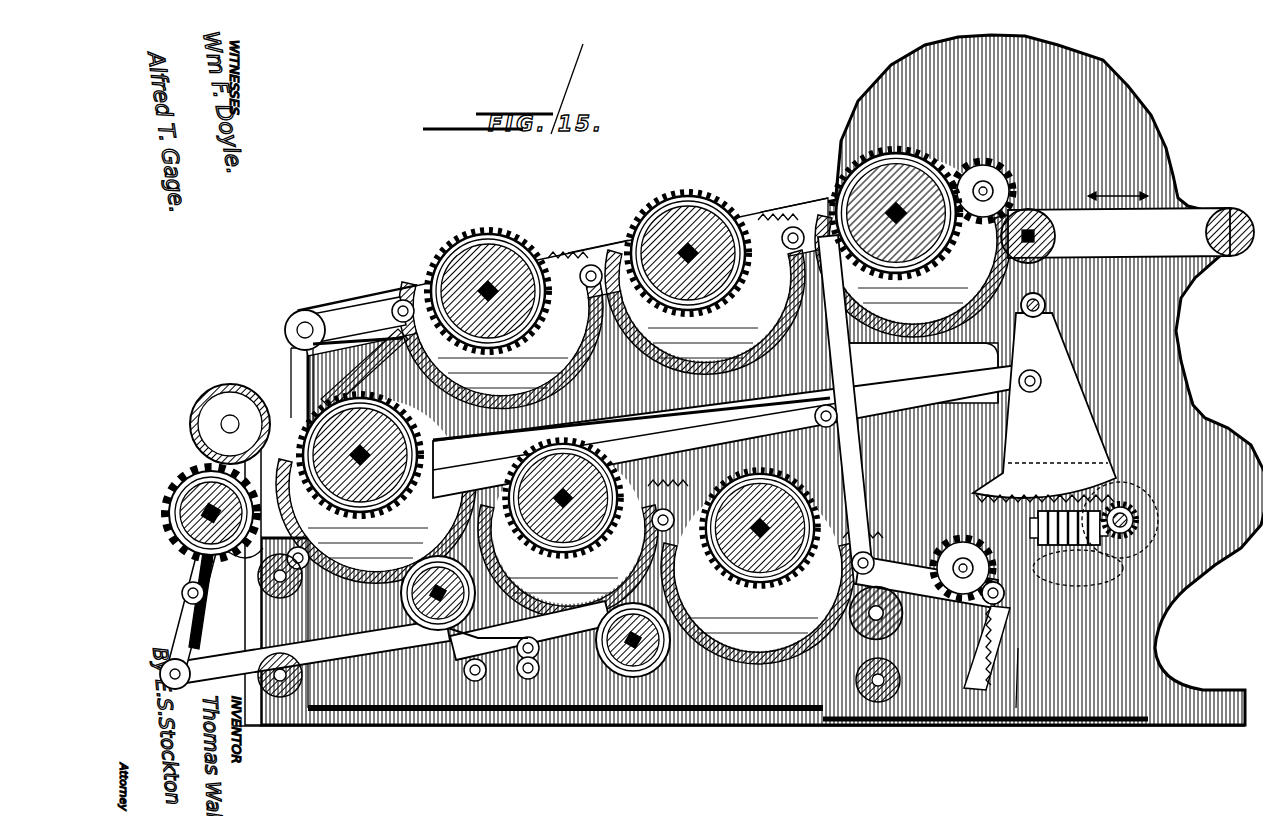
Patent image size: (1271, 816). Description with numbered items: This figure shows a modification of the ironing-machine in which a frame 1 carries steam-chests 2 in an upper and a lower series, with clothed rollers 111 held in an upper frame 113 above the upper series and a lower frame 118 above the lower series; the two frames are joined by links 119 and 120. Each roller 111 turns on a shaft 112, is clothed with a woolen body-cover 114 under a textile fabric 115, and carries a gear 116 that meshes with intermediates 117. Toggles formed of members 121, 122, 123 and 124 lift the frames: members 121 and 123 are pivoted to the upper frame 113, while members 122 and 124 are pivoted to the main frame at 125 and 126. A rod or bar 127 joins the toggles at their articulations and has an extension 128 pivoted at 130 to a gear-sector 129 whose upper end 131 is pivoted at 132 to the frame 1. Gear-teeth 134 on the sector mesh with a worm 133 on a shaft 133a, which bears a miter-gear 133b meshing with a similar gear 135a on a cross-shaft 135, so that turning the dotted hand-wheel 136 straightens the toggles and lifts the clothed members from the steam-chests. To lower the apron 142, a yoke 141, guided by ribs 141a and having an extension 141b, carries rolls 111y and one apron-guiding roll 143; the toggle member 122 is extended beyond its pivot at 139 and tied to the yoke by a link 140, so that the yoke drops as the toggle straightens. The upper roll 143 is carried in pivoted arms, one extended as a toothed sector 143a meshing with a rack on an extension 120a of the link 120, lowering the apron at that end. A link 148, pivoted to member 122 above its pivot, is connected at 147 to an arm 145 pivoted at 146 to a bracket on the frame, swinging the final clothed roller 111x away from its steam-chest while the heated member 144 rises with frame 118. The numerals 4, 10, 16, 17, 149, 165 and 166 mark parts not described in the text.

The frame 1 is at (1087, 697).
The steam-chests 2 is at (643, 410).
The stud 4 is at (645, 407).
The lever 10 is at (362, 345).
The bar 16 is at (725, 329).
The pinion 17 is at (914, 547).
The clothed rollers 111 is at (629, 367).
The clothed roller 111x is at (160, 513).
The rolls 111y is at (635, 660).
The shafts 112 is at (567, 253).
The frame 113 is at (580, 268).
The woolen body-cover 114 is at (708, 195).
The textile fabric 115 is at (740, 200).
The gear 116 is at (765, 470).
The intermediates 117 is at (593, 347).
The frame 118 is at (648, 507).
The link 119 is at (283, 350).
The link 120 is at (1044, 407).
The extension 120a is at (1032, 652).
The toggle member 121 is at (380, 300).
The toggle member 122 is at (395, 705).
The toggle member 123 is at (812, 378).
The toggle member 124 is at (836, 454).
The pivot 125 is at (440, 705).
The pivot 126 is at (905, 578).
The rod or bar 127 is at (635, 436).
The extension 128 is at (902, 399).
The gear-sector 129 is at (1029, 422).
The pivotal connection 130 is at (1047, 381).
The upper end 131 is at (1040, 292).
The pivot 132 is at (1027, 337).
The worm 133 is at (1060, 545).
The shaft 133a is at (1068, 581).
The miter-gear 133b is at (1150, 540).
The gear-teeth 134 is at (1018, 485).
The cross-shaft 135 is at (1128, 516).
The gear 135a is at (1129, 514).
The hand-wheel 136 is at (1180, 570).
The extension 139 is at (467, 672).
The link 140 is at (548, 690).
The yoke 141 is at (465, 621).
The ribs 141a is at (563, 658).
The extension 141b is at (396, 593).
The apron 142 is at (735, 700).
The apron-guiding rolls 143 is at (275, 690).
The toothed sector 143a is at (1008, 705).
The heated member 144 is at (230, 424).
The arm 145 is at (200, 562).
The pivot 146 is at (180, 590).
The pivotal connection 147 is at (195, 607).
The link 148 is at (313, 651).
The bar 149 is at (382, 637).
The lever 165 is at (1180, 200).
The roller 166 is at (1132, 236).